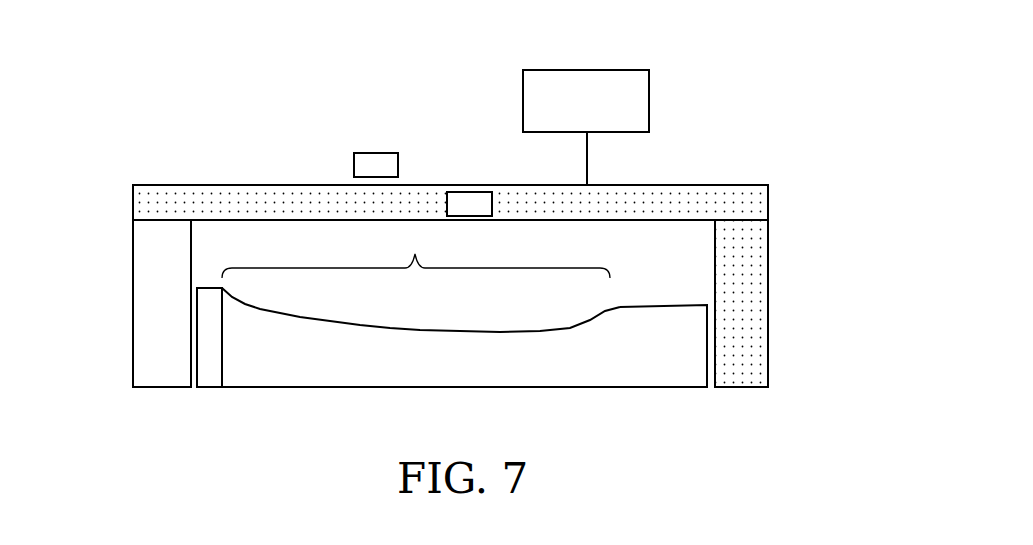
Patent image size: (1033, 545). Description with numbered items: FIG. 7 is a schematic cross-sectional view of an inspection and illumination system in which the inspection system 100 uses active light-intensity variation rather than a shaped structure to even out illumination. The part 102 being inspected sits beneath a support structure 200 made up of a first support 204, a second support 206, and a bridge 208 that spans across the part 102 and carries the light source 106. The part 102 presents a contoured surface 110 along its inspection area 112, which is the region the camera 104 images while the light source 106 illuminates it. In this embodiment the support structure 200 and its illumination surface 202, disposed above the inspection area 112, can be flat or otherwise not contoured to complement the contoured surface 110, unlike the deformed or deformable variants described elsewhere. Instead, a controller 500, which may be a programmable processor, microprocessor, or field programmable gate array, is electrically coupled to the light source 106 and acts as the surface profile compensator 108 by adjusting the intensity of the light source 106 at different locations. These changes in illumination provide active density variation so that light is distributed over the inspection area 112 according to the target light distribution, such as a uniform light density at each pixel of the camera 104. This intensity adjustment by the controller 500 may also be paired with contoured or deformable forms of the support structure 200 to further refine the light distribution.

The inspection system 100 is at (140, 117).
The part 102 is at (645, 387).
The camera 104 is at (374, 153).
The light source 106 is at (470, 192).
The surface profile compensator 108 is at (672, 80).
The contoured surface 110 is at (462, 330).
The inspection area 112 is at (416, 252).
The support structure 200 is at (285, 185).
The illumination surface 202 is at (285, 220).
The first support 204 is at (768, 288).
The second support 206 is at (132, 303).
The bridge 208 is at (727, 185).
The controller 500 is at (650, 108).